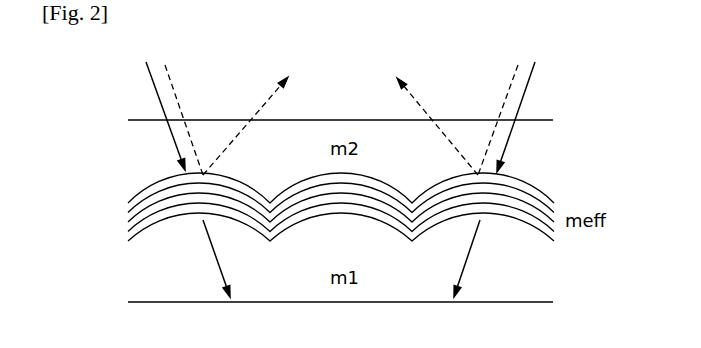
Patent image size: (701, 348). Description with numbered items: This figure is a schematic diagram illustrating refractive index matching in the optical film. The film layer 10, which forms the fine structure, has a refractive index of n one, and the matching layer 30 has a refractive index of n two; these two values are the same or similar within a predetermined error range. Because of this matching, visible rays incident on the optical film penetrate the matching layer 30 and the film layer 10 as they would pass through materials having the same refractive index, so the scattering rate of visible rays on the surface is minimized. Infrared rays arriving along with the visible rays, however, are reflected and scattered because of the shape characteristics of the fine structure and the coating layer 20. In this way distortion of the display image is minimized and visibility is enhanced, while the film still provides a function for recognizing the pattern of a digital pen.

The film layer 10 is at (548, 278).
The coating layer 20 is at (140, 195).
The matching layer 30 is at (550, 142).